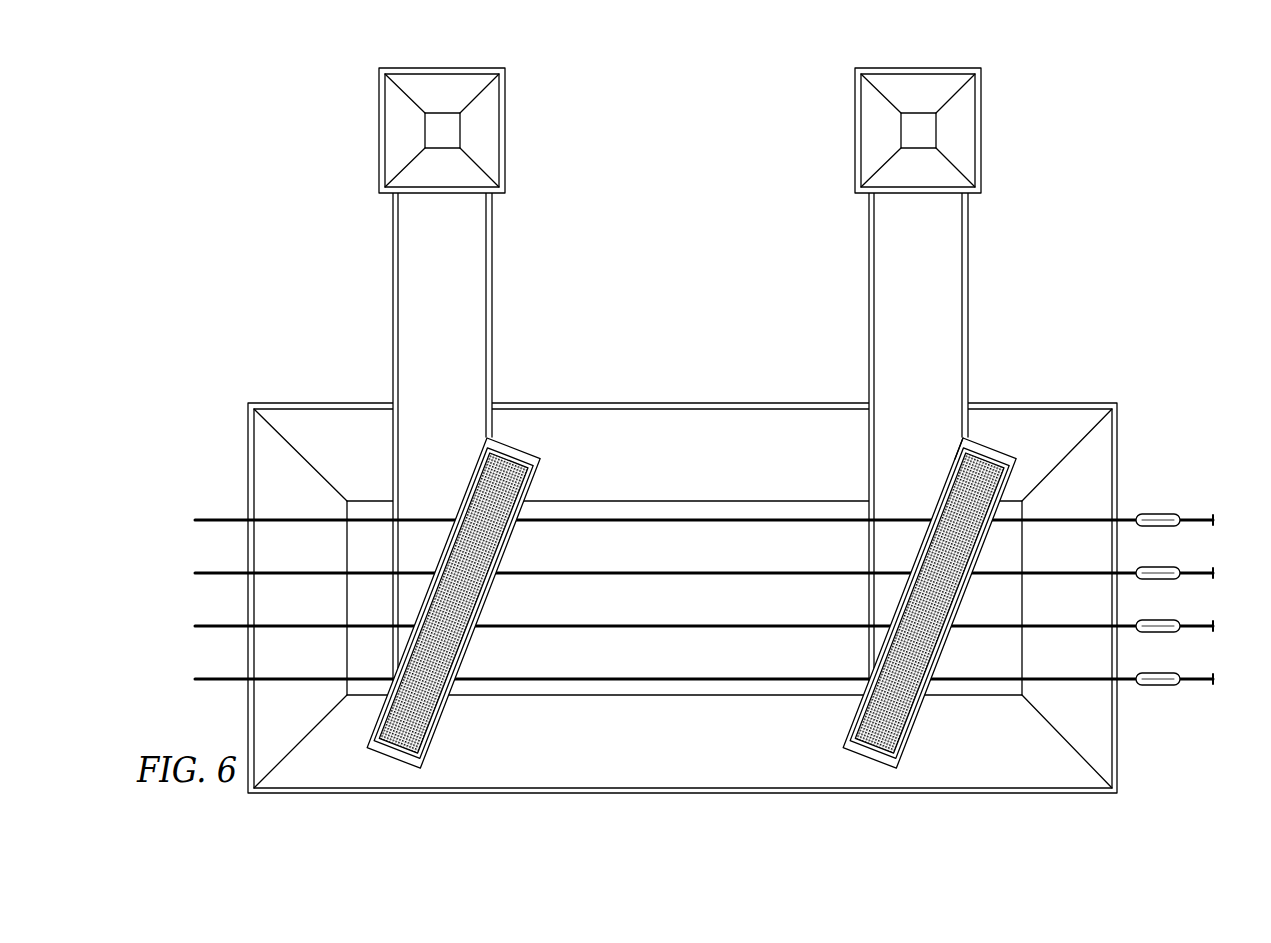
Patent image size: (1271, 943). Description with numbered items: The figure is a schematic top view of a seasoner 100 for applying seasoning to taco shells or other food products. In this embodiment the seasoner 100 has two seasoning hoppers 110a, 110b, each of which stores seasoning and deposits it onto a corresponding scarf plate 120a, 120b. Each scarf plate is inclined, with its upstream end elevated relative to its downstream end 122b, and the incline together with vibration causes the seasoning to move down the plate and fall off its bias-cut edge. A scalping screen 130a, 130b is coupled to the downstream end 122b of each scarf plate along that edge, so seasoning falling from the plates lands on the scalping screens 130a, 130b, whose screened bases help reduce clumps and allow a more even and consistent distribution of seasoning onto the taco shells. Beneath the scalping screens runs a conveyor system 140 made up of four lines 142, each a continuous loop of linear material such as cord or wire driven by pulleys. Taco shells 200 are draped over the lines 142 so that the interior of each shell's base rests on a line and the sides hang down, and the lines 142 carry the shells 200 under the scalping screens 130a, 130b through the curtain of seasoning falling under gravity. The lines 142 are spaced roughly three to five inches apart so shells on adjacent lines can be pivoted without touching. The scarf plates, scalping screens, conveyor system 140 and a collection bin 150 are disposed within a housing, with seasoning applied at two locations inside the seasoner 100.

The seasoner 100 is at (243, 222).
The seasoning hopper 110a is at (994, 131).
The seasoning hopper 110b is at (518, 131).
The scarf plate 120a is at (983, 300).
The scarf plate 120b is at (507, 300).
The downstream end of the scarf plate 122b is at (973, 392).
The scalping screen 130a is at (934, 733).
The scalping screen 130b is at (458, 733).
The conveyor system 140 is at (1203, 695).
The lines 142 is at (1200, 679).
The collection bin 150 is at (680, 394).
The taco shells 200 is at (1165, 513).